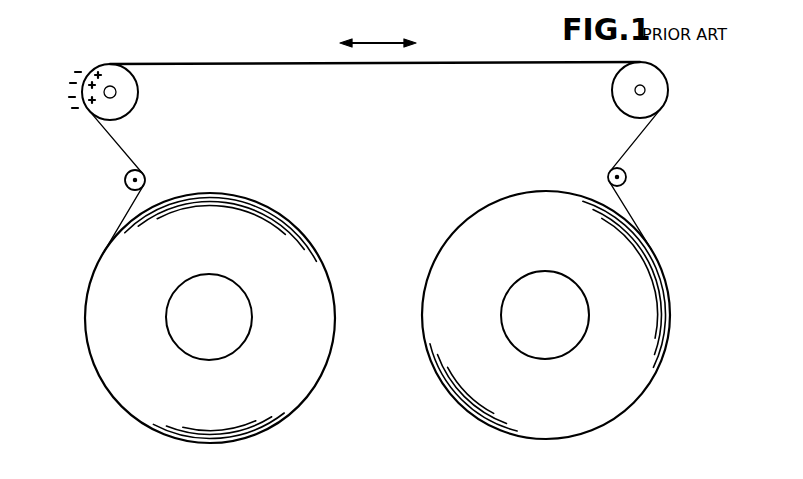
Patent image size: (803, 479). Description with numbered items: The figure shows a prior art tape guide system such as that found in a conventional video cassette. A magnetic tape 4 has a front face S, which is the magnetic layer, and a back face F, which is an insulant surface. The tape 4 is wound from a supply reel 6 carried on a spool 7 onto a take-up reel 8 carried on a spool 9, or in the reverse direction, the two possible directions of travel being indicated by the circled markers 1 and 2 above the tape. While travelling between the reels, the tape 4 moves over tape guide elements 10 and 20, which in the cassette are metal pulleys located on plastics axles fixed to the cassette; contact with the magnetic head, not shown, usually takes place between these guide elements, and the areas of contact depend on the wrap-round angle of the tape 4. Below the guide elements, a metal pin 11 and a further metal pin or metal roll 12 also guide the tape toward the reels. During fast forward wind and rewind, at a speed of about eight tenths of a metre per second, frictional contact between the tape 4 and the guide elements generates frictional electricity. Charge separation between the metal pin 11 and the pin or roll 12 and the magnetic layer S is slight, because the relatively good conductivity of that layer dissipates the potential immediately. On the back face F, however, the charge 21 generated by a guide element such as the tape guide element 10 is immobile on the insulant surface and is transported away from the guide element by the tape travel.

The first direction of film travel 1 is at (404, 24).
The second direction of film travel 2 is at (369, 24).
The magnetic tape 4 is at (492, 60).
The supply reel 6 is at (268, 396).
The spool 7 is at (236, 333).
The take-up reel 8 is at (473, 386).
The spool 9 is at (515, 322).
The tape guide element 10 is at (128, 98).
The metal pin 11 is at (125, 180).
The metal pin or metal roll 12 is at (627, 178).
The tape guide element 20 is at (620, 90).
The charge 21 is at (76, 80).
The front face S is at (233, 58).
The back face F is at (297, 65).